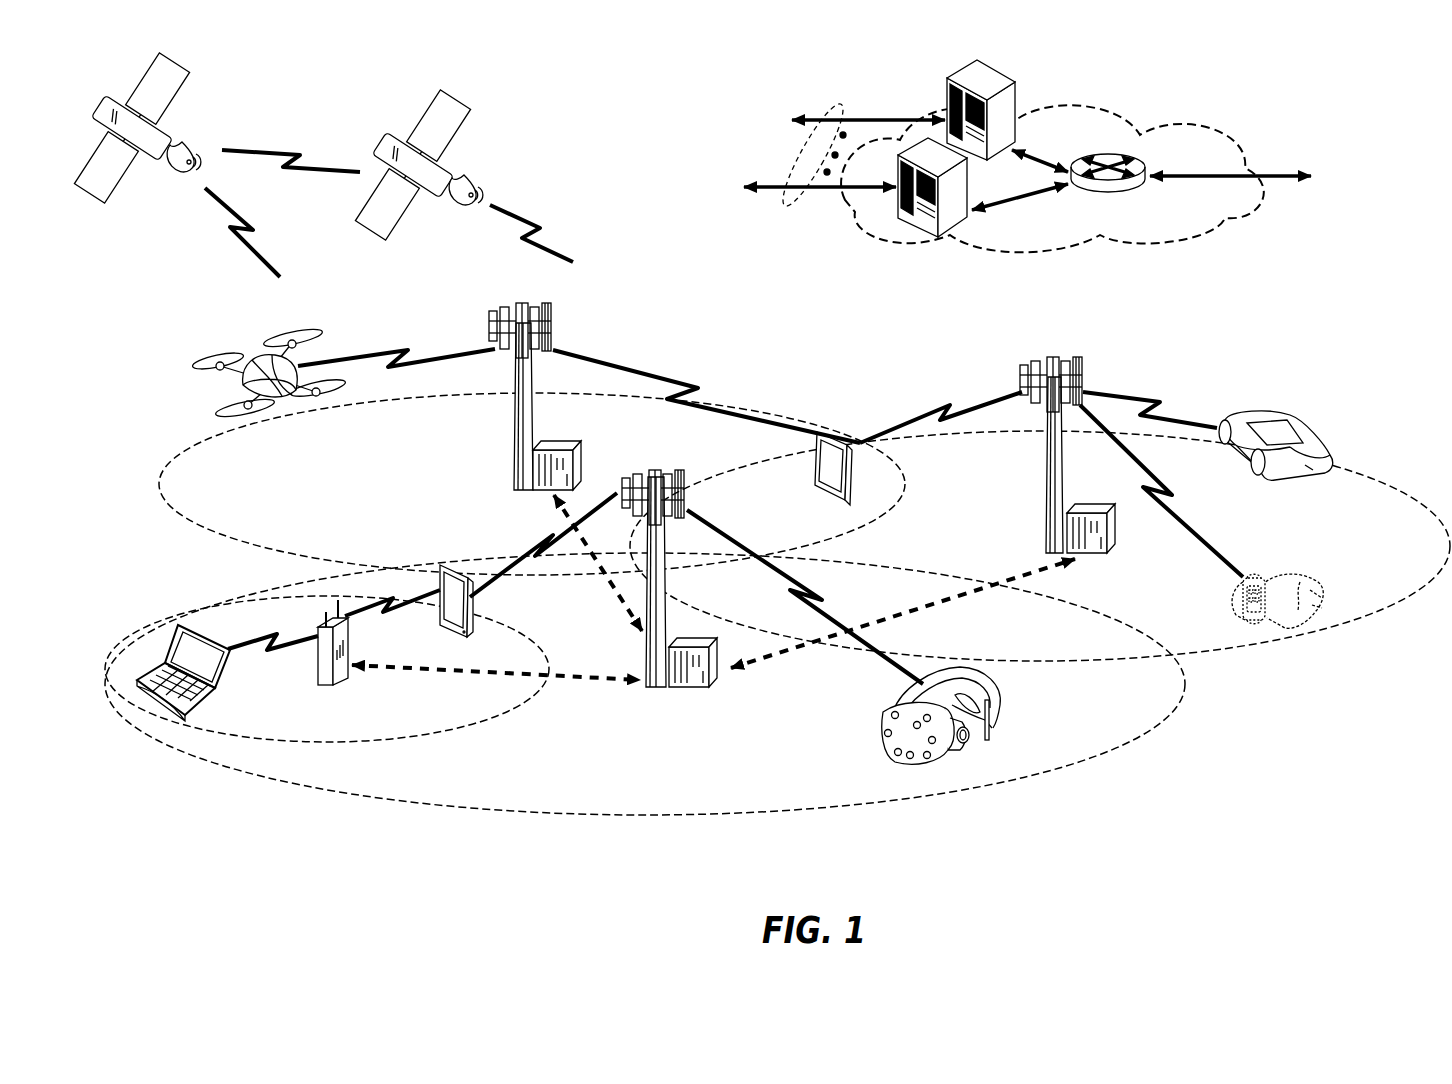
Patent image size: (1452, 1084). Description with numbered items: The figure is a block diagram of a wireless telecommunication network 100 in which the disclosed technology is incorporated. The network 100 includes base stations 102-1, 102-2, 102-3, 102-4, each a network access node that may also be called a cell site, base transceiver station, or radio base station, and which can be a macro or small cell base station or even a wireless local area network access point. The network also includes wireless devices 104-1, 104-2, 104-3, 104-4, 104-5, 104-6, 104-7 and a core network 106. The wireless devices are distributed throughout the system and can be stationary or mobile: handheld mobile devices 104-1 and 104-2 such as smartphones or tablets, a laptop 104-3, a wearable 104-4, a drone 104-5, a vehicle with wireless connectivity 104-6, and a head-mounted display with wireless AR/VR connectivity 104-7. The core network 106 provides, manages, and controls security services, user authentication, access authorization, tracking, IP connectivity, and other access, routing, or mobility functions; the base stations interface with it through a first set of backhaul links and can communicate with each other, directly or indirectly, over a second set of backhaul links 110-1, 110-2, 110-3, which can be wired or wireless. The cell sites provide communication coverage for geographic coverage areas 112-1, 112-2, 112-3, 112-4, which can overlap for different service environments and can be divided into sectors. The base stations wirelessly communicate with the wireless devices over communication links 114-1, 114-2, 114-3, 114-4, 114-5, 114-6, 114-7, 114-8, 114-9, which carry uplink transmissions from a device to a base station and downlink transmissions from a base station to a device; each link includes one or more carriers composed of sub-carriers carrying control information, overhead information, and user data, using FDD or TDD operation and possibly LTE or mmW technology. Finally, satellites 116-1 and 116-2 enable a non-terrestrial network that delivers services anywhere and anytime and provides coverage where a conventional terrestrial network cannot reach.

The wireless telecommunication network 100 is at (1382, 131).
The base station 102-1 is at (657, 690).
The base station 102-2 is at (513, 433).
The base station 102-3 is at (1047, 473).
The base station 102-4 is at (318, 672).
The handheld mobile device 104-1 is at (473, 612).
The handheld mobile device 104-2 is at (812, 470).
The laptop 104-3 is at (160, 713).
The wearable 104-4 is at (1257, 576).
The drone 104-5 is at (277, 400).
The vehicle with wireless connectivity 104-6 is at (1293, 420).
The head-mounted display 104-7 is at (998, 705).
The core network 106 is at (1138, 242).
The backhaul link 110-1 is at (387, 670).
The backhaul link 110-2 is at (967, 592).
The backhaul link 110-3 is at (617, 595).
The geographic coverage area 112-1 is at (580, 818).
The geographic coverage area 112-2 is at (455, 728).
The geographic coverage area 112-3 is at (225, 536).
The geographic coverage area 112-4 is at (1353, 468).
The communication link 114-1 is at (820, 597).
The communication link 114-2 is at (540, 546).
The communication link 114-3 is at (245, 645).
The communication link 114-4 is at (390, 613).
The communication link 114-5 is at (397, 353).
The communication link 114-6 is at (690, 393).
The communication link 114-7 is at (943, 410).
The communication link 114-8 is at (1178, 505).
The communication link 114-9 is at (1147, 402).
The satellite 116-1 is at (188, 140).
The satellite 116-2 is at (473, 183).